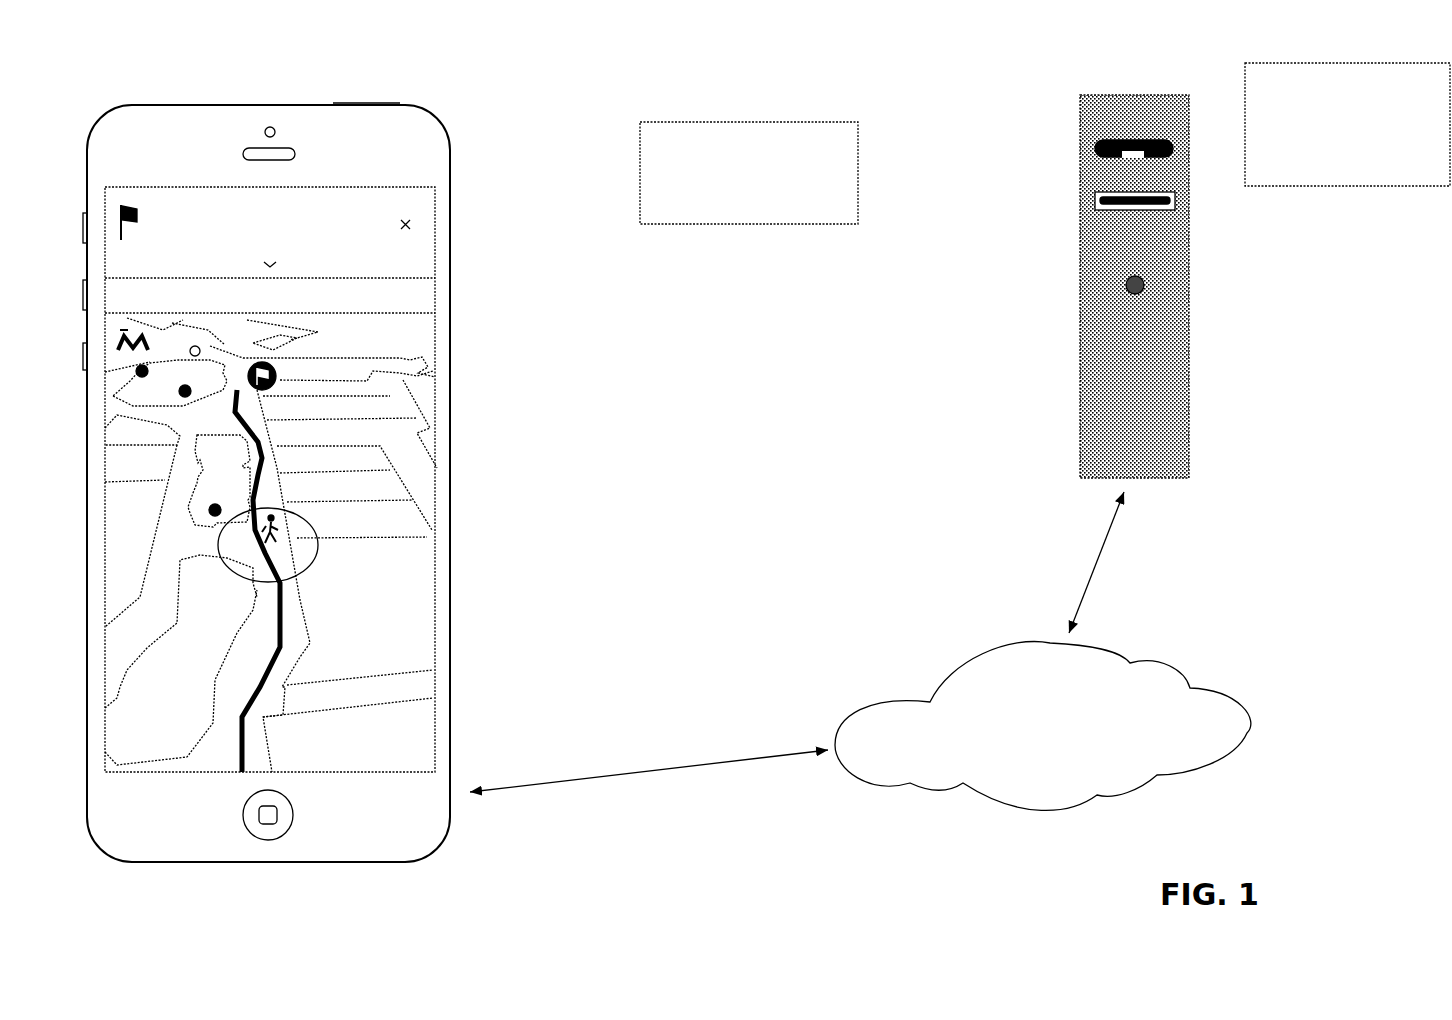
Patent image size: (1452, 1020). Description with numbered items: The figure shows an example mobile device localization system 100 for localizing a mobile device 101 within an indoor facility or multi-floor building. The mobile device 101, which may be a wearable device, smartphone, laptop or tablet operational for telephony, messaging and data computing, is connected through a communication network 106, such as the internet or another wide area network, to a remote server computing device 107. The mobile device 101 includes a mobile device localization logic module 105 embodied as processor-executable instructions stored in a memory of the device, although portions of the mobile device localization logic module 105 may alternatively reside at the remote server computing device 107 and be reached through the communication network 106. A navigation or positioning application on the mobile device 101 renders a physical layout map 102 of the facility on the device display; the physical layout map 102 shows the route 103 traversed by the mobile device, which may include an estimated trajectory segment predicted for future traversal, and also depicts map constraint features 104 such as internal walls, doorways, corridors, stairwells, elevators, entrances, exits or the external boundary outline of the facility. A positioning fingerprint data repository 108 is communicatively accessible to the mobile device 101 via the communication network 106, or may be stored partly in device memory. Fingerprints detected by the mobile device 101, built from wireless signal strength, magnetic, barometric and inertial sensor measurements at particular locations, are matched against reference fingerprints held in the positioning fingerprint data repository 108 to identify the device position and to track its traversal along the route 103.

The mobile device localization system 100 is at (982, 39).
The mobile device 101 is at (387, 159).
The physical layout map 102 is at (188, 714).
The route 103 is at (282, 651).
The map constraint features 104 is at (408, 480).
The mobile device localization logic module 105 is at (449, 248).
The communication network 106 is at (1075, 777).
The remote server computing device 107 is at (1157, 386).
The positioning fingerprint data repository 108 is at (1189, 177).